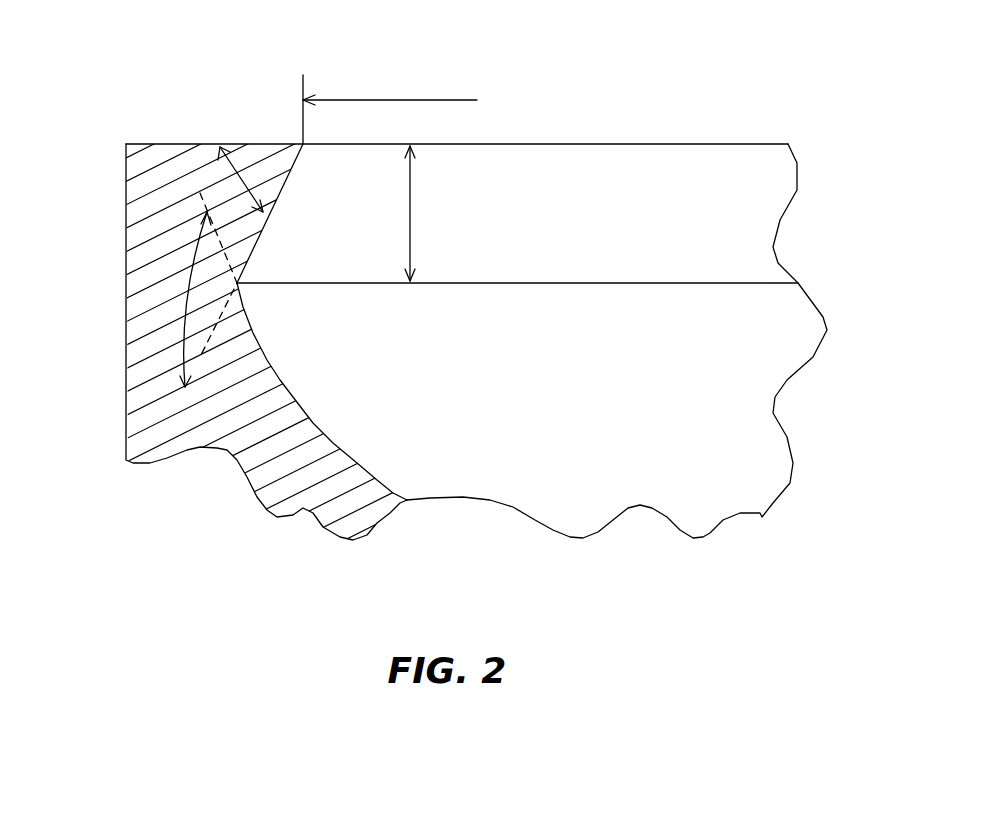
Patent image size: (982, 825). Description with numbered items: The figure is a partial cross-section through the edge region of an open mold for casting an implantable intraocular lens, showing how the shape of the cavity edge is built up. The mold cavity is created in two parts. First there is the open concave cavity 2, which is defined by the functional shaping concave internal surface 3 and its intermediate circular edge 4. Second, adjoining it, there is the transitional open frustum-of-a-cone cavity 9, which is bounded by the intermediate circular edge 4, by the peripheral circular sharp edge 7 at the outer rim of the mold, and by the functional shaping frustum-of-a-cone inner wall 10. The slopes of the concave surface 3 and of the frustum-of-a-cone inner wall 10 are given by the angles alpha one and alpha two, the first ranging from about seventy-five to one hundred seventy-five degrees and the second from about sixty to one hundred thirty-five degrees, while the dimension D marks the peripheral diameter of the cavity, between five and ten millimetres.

The open concave cavity 2 is at (540, 380).
The functional shaping concave internal surface 3 is at (287, 393).
The intermediate circular edge 4 is at (543, 282).
The peripheral circular sharp edge 7 is at (483, 143).
The transitional open frustum-of-a-cone cavity 9 is at (475, 232).
The functional shaping frustum-of-a-cone inner wall 10 is at (255, 144).